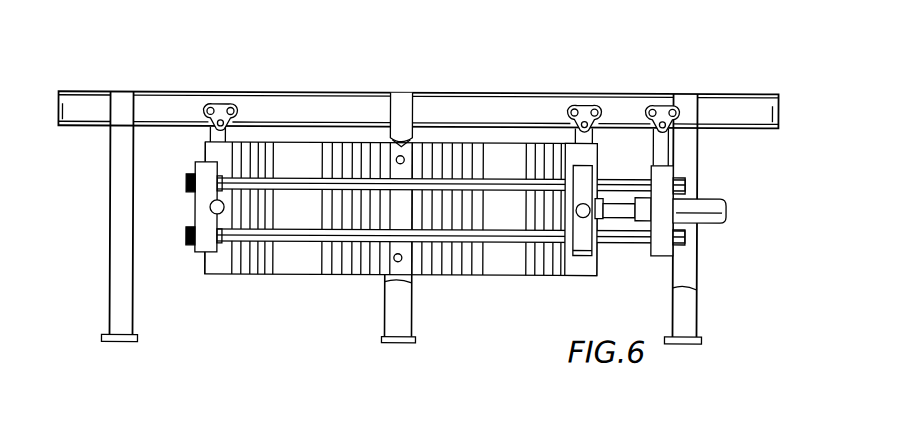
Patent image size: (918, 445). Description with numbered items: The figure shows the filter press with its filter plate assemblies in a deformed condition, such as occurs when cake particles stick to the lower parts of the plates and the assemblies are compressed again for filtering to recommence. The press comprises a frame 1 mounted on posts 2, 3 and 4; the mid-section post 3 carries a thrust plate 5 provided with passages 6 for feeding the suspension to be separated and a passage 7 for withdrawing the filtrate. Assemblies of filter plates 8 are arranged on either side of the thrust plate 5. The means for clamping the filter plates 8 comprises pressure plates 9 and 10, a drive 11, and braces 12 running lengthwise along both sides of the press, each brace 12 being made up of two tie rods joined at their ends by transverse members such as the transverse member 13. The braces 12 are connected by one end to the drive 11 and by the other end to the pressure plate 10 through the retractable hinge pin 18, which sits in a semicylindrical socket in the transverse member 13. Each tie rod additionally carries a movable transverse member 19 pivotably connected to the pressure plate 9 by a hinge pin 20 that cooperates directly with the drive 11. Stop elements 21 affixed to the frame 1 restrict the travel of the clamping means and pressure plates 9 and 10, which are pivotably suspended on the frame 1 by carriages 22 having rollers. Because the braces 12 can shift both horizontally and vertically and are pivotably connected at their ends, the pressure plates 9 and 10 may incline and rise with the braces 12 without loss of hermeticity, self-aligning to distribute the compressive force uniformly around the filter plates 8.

The frame 1 is at (512, 106).
The post 2 is at (128, 320).
The post 3 is at (404, 316).
The post 4 is at (690, 312).
The thrust plate 5 is at (398, 156).
The passage 6 is at (414, 150).
The passage 7 is at (396, 262).
The filter plates 8 is at (318, 162).
The pressure plate 9 is at (592, 160).
The pressure plate 10 is at (226, 146).
The drive 11 is at (710, 208).
The braces 12 is at (488, 198).
The transverse member 13 is at (198, 206).
The hinge pin 18 is at (212, 202).
The movable transverse member 19 is at (580, 258).
The hinge pin 20 is at (596, 190).
The stop element 21 is at (68, 110).
The carriages 22 is at (222, 106).